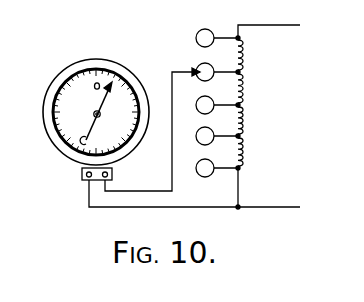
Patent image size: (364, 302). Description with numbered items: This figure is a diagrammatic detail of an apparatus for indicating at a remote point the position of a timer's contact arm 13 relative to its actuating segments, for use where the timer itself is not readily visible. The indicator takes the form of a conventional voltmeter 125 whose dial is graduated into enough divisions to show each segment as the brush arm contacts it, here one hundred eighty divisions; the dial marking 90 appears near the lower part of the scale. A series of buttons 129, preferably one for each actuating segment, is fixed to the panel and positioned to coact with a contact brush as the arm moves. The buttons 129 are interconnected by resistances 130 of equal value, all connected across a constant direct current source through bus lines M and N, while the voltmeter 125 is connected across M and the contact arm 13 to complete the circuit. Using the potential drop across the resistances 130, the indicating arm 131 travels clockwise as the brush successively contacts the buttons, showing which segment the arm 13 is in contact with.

The voltmeter 125 is at (96, 108).
The indicating arm 131 is at (113, 86).
The contact arm 13 is at (194, 118).
The buttons 129 is at (201, 30).
The resistance 130 is at (247, 58).
The dial scale marking 90 is at (90, 142).